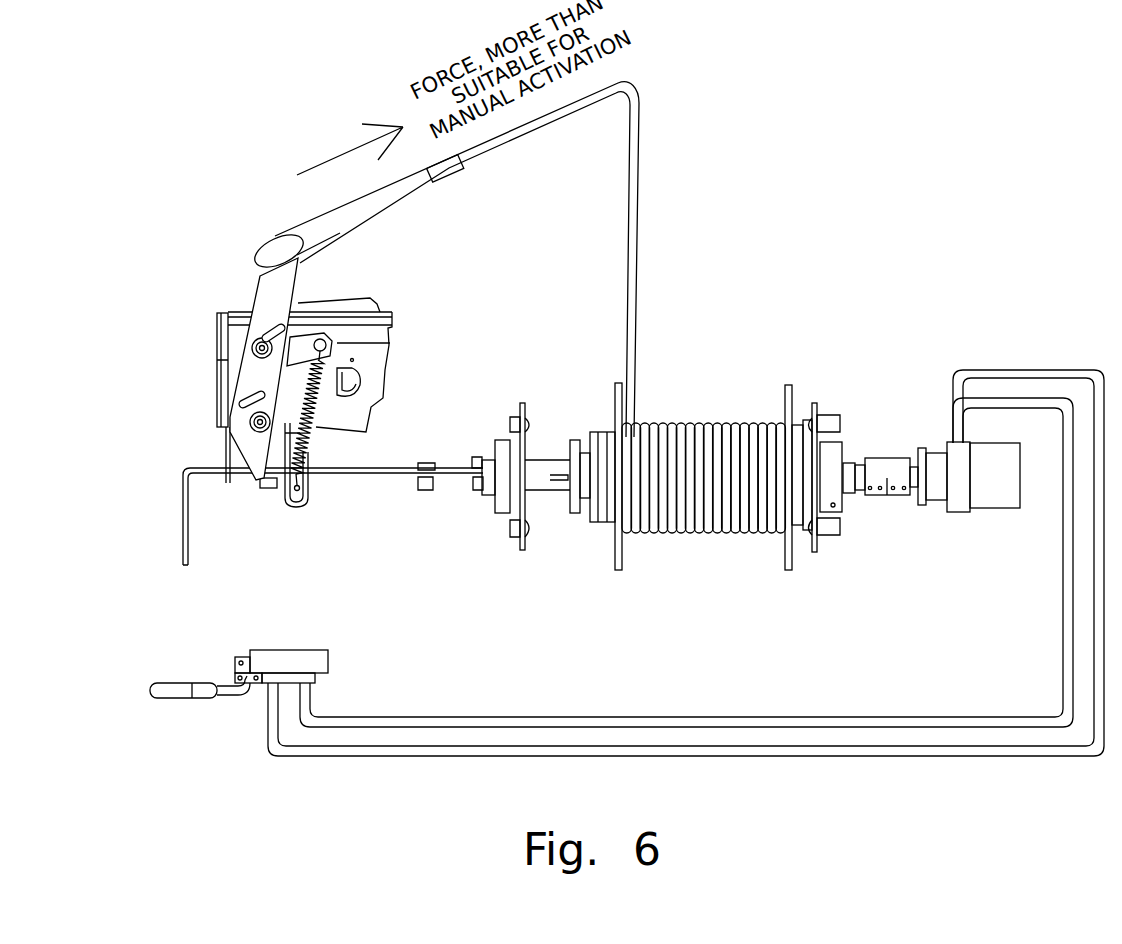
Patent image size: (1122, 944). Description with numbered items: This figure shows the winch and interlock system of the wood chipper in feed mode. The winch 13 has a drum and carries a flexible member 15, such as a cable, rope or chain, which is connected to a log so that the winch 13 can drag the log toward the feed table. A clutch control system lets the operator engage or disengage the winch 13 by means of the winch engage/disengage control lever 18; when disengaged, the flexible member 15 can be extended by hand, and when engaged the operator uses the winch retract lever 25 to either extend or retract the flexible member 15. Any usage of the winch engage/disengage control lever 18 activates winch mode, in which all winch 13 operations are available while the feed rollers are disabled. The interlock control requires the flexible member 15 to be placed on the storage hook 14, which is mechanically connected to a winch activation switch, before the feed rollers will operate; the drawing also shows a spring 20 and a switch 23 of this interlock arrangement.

The winch 13 is at (720, 382).
The storage hook 14 is at (283, 300).
The flexible member 15 is at (440, 178).
The winch engage/disengage control lever 18 is at (182, 522).
The spring 20 is at (313, 452).
The switch 23 is at (303, 655).
The winch retract lever 25 is at (148, 692).